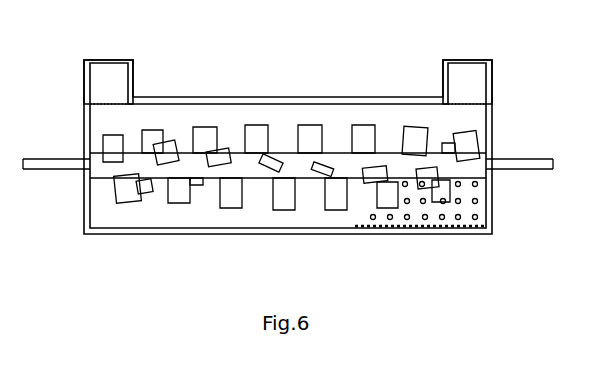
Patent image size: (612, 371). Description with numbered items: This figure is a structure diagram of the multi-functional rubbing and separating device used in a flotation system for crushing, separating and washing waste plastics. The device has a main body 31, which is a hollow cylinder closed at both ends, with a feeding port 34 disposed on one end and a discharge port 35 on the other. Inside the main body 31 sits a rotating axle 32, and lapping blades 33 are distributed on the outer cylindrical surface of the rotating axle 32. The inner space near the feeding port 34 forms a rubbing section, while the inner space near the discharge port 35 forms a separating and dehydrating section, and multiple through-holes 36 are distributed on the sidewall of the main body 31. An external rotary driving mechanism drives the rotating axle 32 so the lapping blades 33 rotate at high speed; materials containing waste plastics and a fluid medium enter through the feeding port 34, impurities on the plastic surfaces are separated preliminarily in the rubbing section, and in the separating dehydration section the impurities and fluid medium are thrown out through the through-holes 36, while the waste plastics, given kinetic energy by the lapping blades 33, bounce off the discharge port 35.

The main body 31 is at (180, 112).
The rotating axle 32 is at (147, 167).
The lapping blades 33 is at (230, 188).
The feeding port 34 is at (112, 82).
The discharge port 35 is at (458, 88).
The through-holes 36 is at (405, 198).